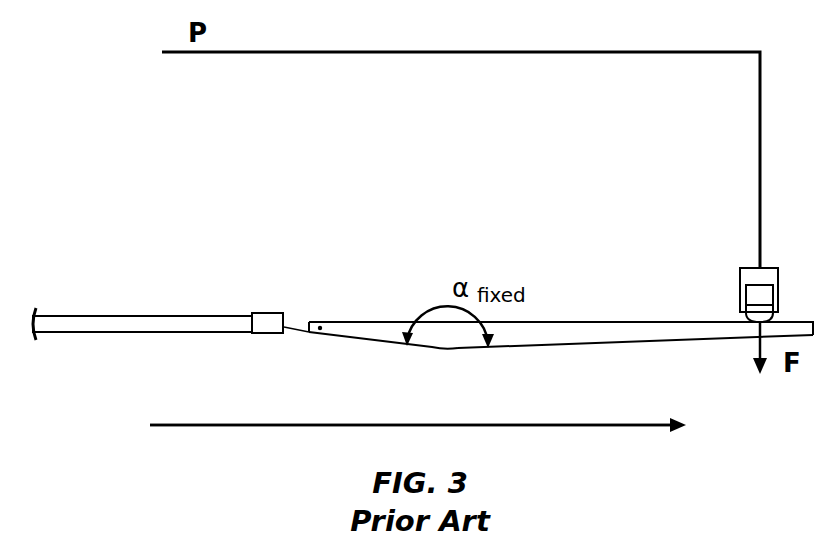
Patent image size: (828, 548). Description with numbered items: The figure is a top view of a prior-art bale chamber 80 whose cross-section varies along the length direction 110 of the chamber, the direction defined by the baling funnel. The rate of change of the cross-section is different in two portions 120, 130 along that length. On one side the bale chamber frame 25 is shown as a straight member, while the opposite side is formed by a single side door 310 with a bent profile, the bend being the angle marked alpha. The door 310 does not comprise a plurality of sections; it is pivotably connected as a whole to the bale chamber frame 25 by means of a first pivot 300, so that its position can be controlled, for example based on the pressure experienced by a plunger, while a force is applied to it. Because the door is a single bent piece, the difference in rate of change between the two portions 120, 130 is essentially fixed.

The bale chamber frame 25 is at (204, 292).
The bale chamber 80 is at (171, 290).
The first pivot 300 is at (320, 334).
The door 310 is at (590, 330).
The first portion 120 is at (377, 340).
The second portion 130 is at (630, 342).
The length direction 110 is at (503, 423).